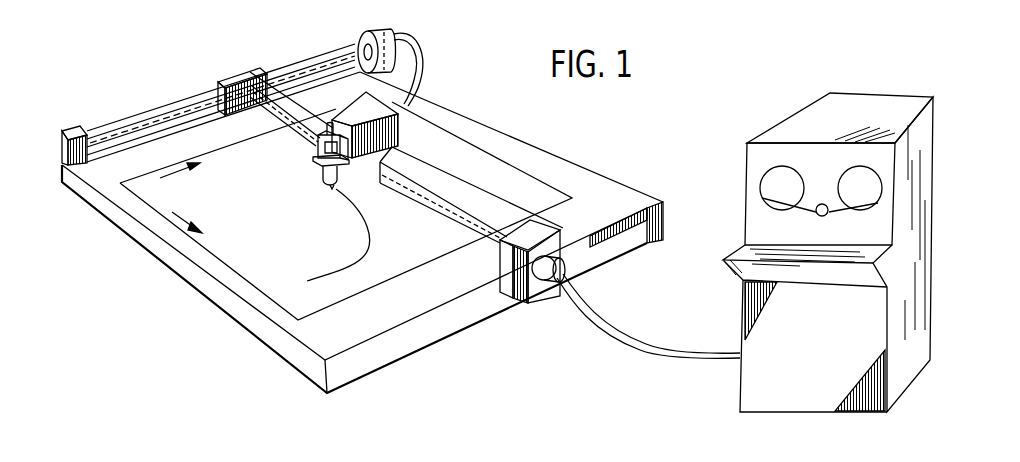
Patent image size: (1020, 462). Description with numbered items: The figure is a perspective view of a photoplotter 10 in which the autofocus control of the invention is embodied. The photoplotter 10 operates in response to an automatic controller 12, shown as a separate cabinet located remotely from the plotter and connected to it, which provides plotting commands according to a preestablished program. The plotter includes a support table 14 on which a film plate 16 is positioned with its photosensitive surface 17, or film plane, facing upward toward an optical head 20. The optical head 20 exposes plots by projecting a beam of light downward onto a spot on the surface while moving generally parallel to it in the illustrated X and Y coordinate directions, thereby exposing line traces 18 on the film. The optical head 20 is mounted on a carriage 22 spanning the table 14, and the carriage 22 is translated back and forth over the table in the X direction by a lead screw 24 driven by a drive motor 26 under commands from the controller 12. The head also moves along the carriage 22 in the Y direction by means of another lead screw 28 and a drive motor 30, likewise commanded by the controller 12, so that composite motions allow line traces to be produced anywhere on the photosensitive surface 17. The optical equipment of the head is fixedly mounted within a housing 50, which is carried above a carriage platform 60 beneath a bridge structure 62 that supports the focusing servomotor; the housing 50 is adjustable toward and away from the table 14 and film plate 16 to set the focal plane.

The photoplotter 10 is at (461, 130).
The automatic controller 12 is at (845, 115).
The support table 14 is at (535, 171).
The film plate 16 is at (540, 203).
The photosensitive surface 17 is at (483, 175).
The line traces 18 is at (359, 258).
The optical head 20 is at (390, 108).
The carriage 22 is at (543, 228).
The lead screw 24 is at (303, 63).
The drive motor 26 is at (383, 30).
The lead screw 28 is at (450, 219).
The drive motor 30 is at (558, 264).
The housing 50 is at (323, 172).
The carriage platform 60 is at (316, 152).
The bridge structure 62 is at (326, 129).